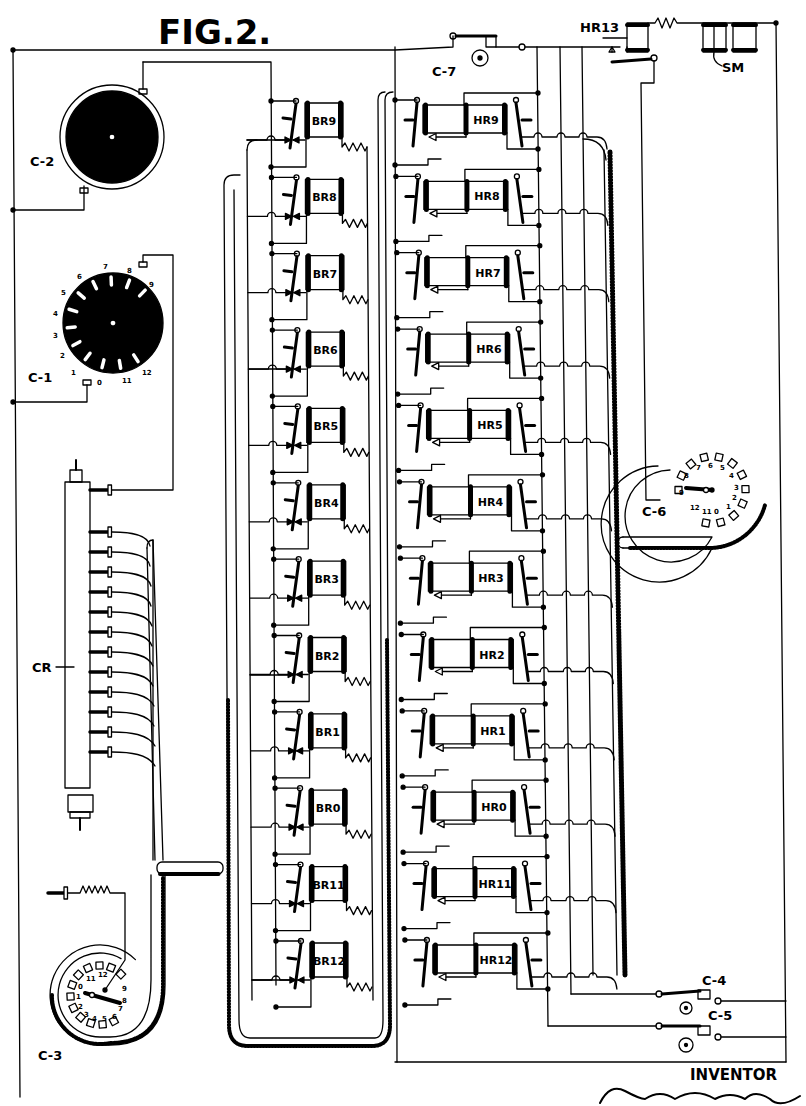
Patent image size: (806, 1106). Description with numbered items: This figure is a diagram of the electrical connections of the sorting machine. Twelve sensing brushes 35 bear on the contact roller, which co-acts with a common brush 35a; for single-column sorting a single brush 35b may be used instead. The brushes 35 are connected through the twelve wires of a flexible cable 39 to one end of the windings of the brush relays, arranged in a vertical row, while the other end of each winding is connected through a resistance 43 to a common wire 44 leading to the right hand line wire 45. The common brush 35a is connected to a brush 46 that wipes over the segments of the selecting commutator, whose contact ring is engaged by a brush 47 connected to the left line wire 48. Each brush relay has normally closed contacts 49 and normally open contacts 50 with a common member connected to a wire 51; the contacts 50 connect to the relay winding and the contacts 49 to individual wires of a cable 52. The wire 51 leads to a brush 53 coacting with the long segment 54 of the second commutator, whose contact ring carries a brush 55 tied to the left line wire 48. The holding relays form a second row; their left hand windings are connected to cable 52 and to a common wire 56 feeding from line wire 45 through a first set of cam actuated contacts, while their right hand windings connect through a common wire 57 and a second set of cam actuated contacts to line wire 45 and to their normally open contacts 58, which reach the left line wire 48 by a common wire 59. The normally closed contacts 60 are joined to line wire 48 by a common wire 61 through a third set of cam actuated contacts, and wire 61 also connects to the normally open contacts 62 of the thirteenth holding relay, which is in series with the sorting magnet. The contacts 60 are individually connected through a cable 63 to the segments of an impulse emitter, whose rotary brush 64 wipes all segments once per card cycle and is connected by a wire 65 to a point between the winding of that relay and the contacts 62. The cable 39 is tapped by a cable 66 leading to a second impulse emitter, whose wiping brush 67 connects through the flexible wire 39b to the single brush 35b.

The sensing brushes 35 is at (96, 538).
The common brush 35a is at (102, 486).
The single brush 35b is at (55, 896).
The flexible cable 39 is at (154, 832).
The flexible wire 39b is at (88, 894).
The resistance 43 is at (368, 700).
The common wire 44 is at (440, 1062).
The right hand line wire 45 is at (777, 162).
The brush 46 is at (150, 270).
The brush 47 is at (82, 370).
The left line wire 48 is at (14, 612).
The normally closed contacts 49 is at (285, 140).
The normally open contacts 50 is at (296, 140).
The wire 51 is at (225, 57).
The cable 52 is at (312, 1046).
The brush 53 is at (147, 91).
The long segment 54 is at (88, 92).
The brush 55 is at (80, 190).
The common wire 56 is at (560, 190).
The common wire 57 is at (538, 207).
The normally open contacts 58 is at (414, 140).
The common wire 59 is at (395, 68).
The normally closed contacts 60 is at (520, 140).
The common wire 61 is at (582, 74).
The normally open contacts 62 is at (612, 62).
The cable 63 is at (668, 552).
The rotary brush 64 is at (698, 498).
The wire 65 is at (645, 252).
The cable 66 is at (152, 945).
The wiping brush 67 is at (112, 992).